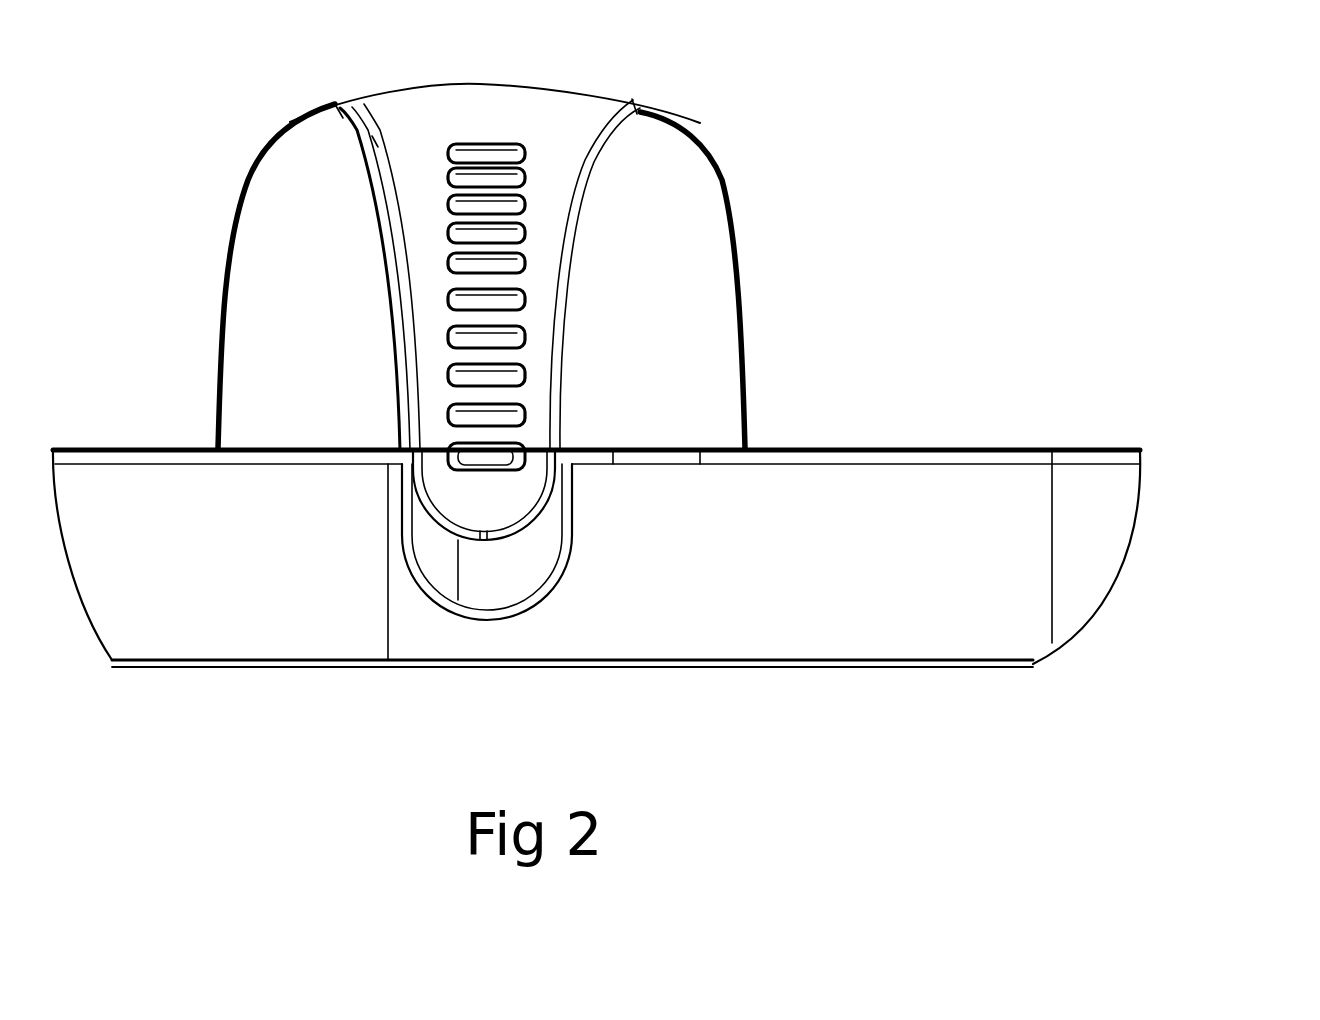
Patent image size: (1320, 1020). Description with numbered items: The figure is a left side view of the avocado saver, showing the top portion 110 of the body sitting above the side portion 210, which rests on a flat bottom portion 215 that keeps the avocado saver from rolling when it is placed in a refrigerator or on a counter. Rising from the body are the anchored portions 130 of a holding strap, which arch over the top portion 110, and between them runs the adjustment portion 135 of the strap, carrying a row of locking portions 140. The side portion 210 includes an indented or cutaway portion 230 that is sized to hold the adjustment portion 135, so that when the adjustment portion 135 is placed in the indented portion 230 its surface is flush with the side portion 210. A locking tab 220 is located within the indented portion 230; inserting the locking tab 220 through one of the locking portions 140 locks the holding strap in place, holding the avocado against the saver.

The top portion 110 is at (965, 446).
The anchored portions of the holding strap 130 is at (290, 340).
The adjustment portion of the holding strap 135 is at (463, 507).
The locking portions of the holding strap 140 is at (513, 337).
The side portion 210 is at (993, 552).
The flat bottom portion 215 is at (798, 668).
The locking tab 220 is at (495, 457).
The indented or cutaway portion 230 is at (497, 582).